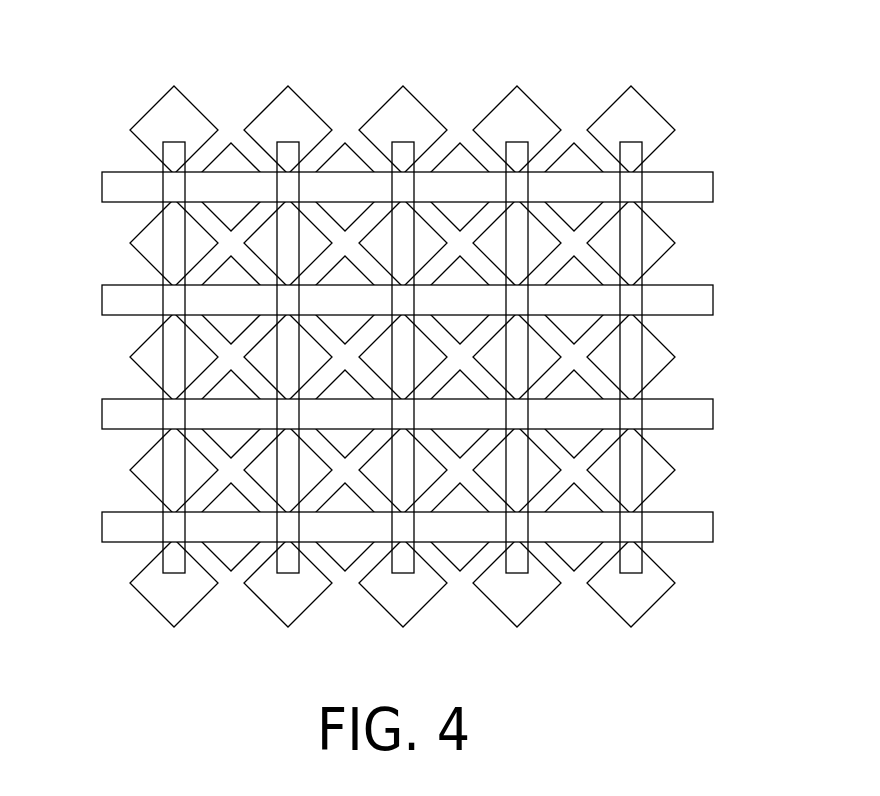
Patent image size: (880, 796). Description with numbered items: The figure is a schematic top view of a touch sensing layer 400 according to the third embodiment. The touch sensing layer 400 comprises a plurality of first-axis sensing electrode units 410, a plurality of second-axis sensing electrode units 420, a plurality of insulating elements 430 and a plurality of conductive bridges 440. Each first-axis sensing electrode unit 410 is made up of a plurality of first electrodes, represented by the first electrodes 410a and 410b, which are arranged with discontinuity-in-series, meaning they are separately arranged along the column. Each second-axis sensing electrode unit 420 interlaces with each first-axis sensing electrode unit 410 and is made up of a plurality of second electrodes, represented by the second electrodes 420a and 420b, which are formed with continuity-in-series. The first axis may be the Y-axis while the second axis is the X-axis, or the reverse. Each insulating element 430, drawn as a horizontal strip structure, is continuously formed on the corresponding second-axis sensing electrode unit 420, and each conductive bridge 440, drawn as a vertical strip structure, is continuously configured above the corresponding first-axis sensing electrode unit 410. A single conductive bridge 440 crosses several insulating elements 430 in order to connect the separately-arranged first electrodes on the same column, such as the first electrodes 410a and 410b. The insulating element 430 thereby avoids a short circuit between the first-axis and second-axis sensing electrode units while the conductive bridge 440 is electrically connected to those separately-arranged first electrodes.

The touch sensing layer 400 is at (790, 102).
The first-axis sensing electrode unit 410 is at (677, 587).
The first electrode 410a is at (512, 110).
The first electrode 410b is at (540, 243).
The second-axis sensing electrode unit 420 is at (233, 158).
The second electrode 420a is at (465, 163).
The second electrode 420b is at (590, 152).
The insulating element 430 is at (695, 190).
The conductive bridge 440 is at (172, 155).